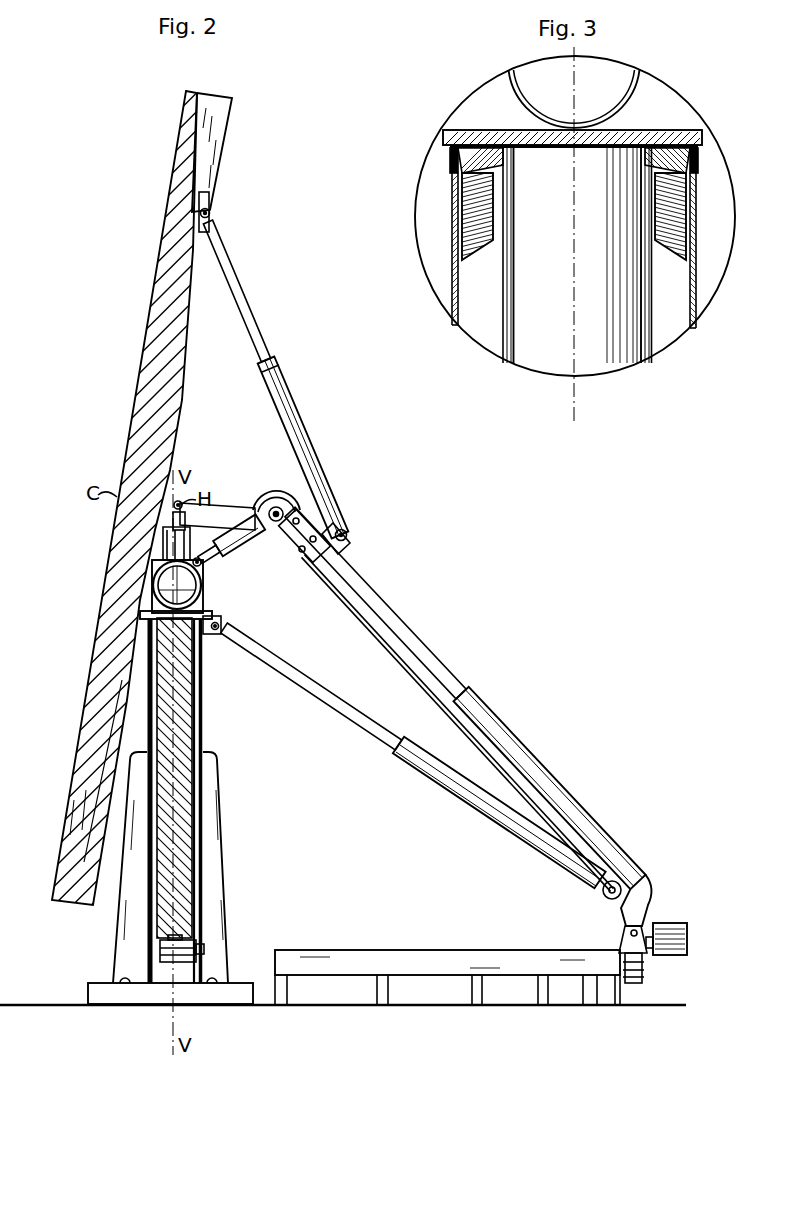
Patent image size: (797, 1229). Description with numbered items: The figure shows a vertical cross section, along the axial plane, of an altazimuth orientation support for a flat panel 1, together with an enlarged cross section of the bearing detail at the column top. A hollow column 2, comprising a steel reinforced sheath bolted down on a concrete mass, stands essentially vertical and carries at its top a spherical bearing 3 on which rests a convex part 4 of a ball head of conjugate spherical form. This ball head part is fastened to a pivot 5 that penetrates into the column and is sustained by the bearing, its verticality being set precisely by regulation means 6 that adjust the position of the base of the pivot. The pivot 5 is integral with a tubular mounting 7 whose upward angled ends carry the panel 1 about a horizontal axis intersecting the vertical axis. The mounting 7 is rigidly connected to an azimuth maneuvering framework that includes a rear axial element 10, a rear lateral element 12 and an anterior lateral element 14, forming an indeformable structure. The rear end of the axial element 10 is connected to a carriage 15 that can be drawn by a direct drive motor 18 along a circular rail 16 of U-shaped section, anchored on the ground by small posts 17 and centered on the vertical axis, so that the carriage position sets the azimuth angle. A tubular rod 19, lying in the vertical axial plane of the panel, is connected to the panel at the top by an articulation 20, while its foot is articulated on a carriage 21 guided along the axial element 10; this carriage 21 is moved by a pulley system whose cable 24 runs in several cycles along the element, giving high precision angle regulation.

In FIG. 2, the flat panel 1 is at (134, 405).
In FIG. 2, the hollow column 2 is at (203, 730).
In FIG. 3, the hollow column 2 is at (456, 280).
In FIG. 2, the spherical bearing 3 is at (212, 627).
In FIG. 3, the spherical bearing 3 is at (478, 192).
In FIG. 2, the convex part of ball head 4 is at (207, 598).
In FIG. 3, the convex part of ball head 4 is at (466, 134).
In FIG. 2, the pivot 5 is at (192, 690).
In FIG. 3, the pivot 5 is at (593, 340).
In FIG. 2, the regulation means 6 is at (184, 940).
In FIG. 2, the tubular mounting 7 is at (203, 560).
In FIG. 3, the tubular mounting 7 is at (642, 86).
In FIG. 2, the rear axial element 10 is at (485, 720).
In FIG. 2, the rear lateral element 12 is at (445, 786).
In FIG. 2, the anterior lateral element 14 is at (211, 521).
In FIG. 2, the carriage 15 is at (645, 958).
In FIG. 2, the circular rail 16 is at (424, 960).
In FIG. 2, the small posts 17 is at (543, 995).
In FIG. 2, the direct drive motor 18 is at (676, 922).
In FIG. 2, the tubular rod 19 is at (294, 430).
In FIG. 2, the articulation 20 is at (212, 210).
In FIG. 2, the carriage 21 is at (347, 537).
In FIG. 2, the cable 24 is at (447, 717).